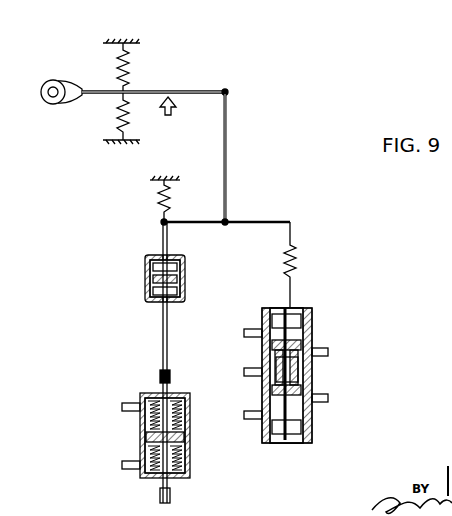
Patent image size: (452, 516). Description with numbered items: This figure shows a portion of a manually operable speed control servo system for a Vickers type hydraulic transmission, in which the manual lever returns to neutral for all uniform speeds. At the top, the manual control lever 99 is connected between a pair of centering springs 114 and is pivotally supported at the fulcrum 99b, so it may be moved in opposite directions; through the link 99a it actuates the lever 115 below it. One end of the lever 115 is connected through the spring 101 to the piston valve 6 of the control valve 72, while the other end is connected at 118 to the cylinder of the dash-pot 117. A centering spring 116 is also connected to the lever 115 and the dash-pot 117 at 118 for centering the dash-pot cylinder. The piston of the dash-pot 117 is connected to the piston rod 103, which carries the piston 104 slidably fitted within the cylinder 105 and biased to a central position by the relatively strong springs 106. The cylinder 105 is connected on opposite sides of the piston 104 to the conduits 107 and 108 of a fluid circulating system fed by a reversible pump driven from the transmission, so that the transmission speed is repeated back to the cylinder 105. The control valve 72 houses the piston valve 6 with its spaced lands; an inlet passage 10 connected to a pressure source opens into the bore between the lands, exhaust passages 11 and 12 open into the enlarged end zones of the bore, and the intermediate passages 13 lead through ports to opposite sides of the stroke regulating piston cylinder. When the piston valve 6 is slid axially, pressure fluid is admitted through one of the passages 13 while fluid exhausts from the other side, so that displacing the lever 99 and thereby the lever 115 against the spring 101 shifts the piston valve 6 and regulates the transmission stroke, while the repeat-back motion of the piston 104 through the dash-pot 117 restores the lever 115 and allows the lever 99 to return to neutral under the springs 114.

The manual control lever 99 is at (91, 88).
The link 99a is at (228, 131).
The fulcrum 99b is at (173, 113).
The centering springs 114 is at (127, 70).
The lever 115 is at (273, 220).
The centering spring 116 is at (160, 200).
The dash-pot 117 is at (186, 264).
The connection point 118 is at (168, 218).
The spring 101 is at (294, 262).
The control valve 72 is at (309, 318).
The piston valve 6 is at (312, 378).
The inlet passage 10 is at (246, 374).
The exhaust passage 11 is at (252, 338).
The exhaust passage 12 is at (256, 419).
The intermediate passages 13 is at (328, 352).
The piston rod 103 is at (159, 379).
The piston 104 is at (186, 438).
The cylinder 105 is at (143, 443).
The springs 106 is at (186, 406).
The conduit 107 is at (130, 403).
The conduit 108 is at (137, 470).